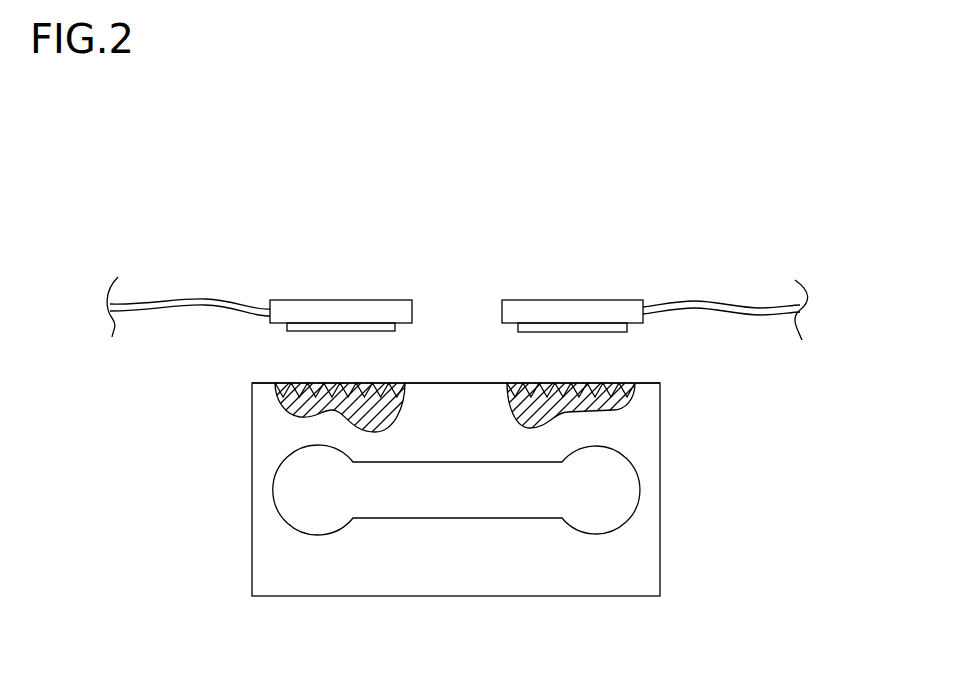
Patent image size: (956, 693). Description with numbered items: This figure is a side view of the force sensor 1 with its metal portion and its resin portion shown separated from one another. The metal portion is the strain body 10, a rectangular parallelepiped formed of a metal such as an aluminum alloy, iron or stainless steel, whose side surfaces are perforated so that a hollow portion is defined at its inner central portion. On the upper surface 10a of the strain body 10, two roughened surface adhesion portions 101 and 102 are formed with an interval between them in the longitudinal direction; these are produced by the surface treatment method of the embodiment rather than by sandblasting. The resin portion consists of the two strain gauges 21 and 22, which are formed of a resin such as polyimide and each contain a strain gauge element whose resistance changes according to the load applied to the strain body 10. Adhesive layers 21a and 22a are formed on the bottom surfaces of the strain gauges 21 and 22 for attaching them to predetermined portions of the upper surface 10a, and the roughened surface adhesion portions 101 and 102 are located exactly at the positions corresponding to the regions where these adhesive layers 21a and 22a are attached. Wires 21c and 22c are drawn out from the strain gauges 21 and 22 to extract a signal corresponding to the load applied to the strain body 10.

The force sensor 1 is at (468, 180).
The strain body 10 is at (458, 600).
The upper surface 10a is at (420, 383).
The roughened surface adhesion portion 101 is at (316, 370).
The roughened surface adhesion portion 102 is at (598, 370).
The strain gauge 21 is at (340, 300).
The adhesive layer 21a is at (300, 331).
The wire 21c is at (212, 298).
The strain gauge 22 is at (572, 300).
The adhesive layer 22a is at (610, 332).
The wire 22c is at (700, 300).